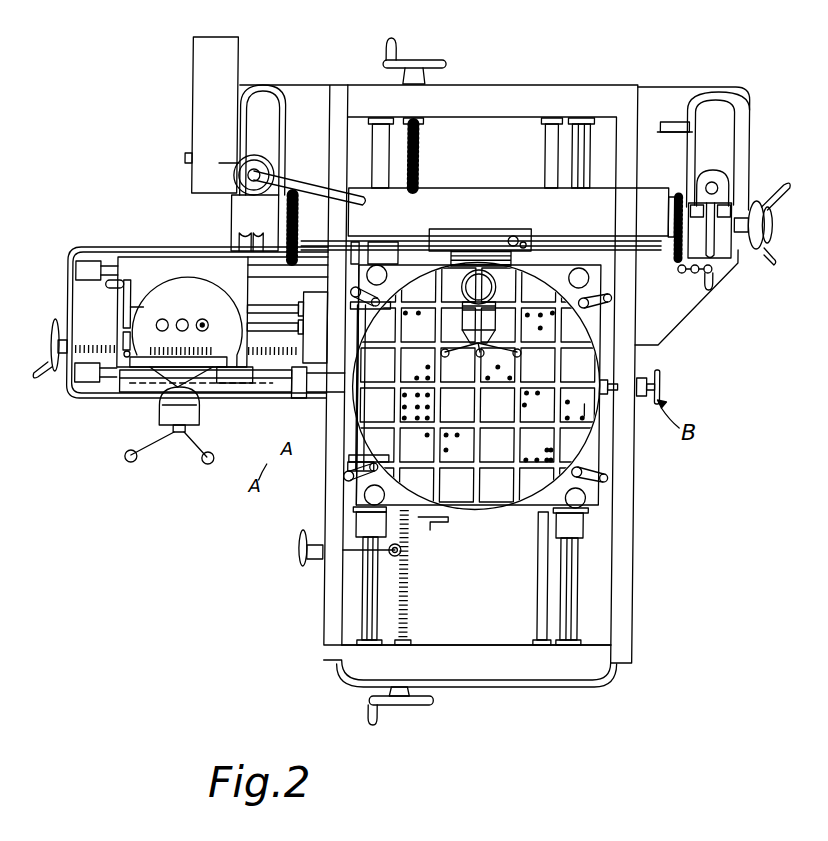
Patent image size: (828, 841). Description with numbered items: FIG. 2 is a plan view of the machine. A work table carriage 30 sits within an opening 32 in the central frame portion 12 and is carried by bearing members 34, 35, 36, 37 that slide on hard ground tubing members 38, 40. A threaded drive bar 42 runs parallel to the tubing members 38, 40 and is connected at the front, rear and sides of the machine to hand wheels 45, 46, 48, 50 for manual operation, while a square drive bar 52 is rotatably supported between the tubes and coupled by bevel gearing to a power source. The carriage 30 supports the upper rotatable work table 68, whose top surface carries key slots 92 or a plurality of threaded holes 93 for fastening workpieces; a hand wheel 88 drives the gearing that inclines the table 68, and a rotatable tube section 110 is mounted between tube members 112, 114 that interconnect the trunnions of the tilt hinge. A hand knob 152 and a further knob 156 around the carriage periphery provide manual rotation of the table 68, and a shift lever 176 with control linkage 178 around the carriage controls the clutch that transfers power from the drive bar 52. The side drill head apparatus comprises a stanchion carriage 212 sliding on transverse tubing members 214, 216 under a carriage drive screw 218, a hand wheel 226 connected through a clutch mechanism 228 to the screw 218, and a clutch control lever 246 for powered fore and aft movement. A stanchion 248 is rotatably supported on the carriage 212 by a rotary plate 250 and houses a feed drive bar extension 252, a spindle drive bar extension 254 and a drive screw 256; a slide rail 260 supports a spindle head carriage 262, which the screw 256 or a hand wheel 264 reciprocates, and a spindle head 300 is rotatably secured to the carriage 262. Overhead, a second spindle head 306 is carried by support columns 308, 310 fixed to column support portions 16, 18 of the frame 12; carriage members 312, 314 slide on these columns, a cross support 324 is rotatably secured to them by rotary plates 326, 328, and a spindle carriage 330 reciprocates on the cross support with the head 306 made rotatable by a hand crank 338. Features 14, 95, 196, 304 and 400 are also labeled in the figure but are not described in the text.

The central frame portion 12 is at (637, 540).
The carriage housing 14 is at (116, 248).
The column support portion 16 is at (306, 94).
The column support portion 18 is at (655, 104).
The work table carriage 30 is at (590, 452).
The opening 32 is at (465, 640).
The bearing member 34 is at (392, 530).
The bearing member 35 is at (558, 527).
The bearing member 36 is at (374, 250).
The bearing member 37 is at (568, 250).
The hard ground tubing member 38 is at (370, 636).
The hard ground tubing member 40 is at (567, 632).
The threaded drive bar 42 is at (412, 588).
The hand wheel 45 is at (424, 66).
The hand wheel 46 is at (394, 704).
The hand wheel 48 is at (305, 550).
The hand wheel 50 is at (660, 389).
The square drive bar 52 is at (543, 556).
The upper rotatable work table 68 is at (592, 410).
The hand wheel 88 is at (600, 378).
The key slots 92 is at (533, 392).
The threaded holes 93 is at (430, 418).
The locating hole 95 is at (568, 398).
The rotatable tube section 110 is at (352, 410).
The tube member 112 is at (368, 337).
The tube member 114 is at (352, 440).
The hand knob 152 is at (419, 175).
The hand knob 156 is at (388, 492).
The shift lever 176 is at (354, 250).
The control linkage 178 is at (350, 478).
The latch 196 is at (442, 530).
The stanchion carriage 212 is at (148, 266).
The hard ground tubing member 214 is at (90, 270).
The hard ground tubing member 216 is at (80, 372).
The carriage drive screw 218 is at (105, 362).
The hand wheel 226 is at (56, 338).
The clutch mechanism 228 is at (140, 342).
The clutch control lever 246 is at (283, 418).
The stanchion 248 is at (180, 272).
The rotary plate 250 is at (198, 320).
The feed drive bar extension 252 is at (162, 320).
The spindle drive bar extension 254 is at (245, 313).
The drive screw 256 is at (215, 328).
The slide rail 260 is at (228, 343).
The spindle head carriage 262 is at (126, 350).
The hand wheel 264 is at (105, 287).
The spindle head 300 is at (202, 372).
The lever 304 is at (118, 326).
The spindle head 306 is at (464, 330).
The support column 308 is at (256, 104).
The support column 310 is at (712, 108).
The carriage member 312 is at (228, 224).
The carriage member 314 is at (716, 258).
The cross support 324 is at (643, 192).
The rotary plate 326 is at (316, 240).
The rotary plate 328 is at (673, 262).
The spindle carriage 330 is at (475, 240).
The hand crank 338 is at (512, 238).
The handwheel 400 is at (760, 245).